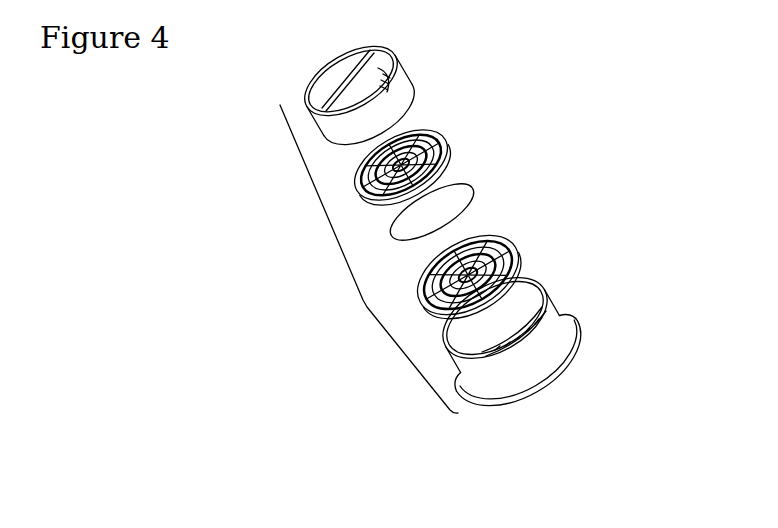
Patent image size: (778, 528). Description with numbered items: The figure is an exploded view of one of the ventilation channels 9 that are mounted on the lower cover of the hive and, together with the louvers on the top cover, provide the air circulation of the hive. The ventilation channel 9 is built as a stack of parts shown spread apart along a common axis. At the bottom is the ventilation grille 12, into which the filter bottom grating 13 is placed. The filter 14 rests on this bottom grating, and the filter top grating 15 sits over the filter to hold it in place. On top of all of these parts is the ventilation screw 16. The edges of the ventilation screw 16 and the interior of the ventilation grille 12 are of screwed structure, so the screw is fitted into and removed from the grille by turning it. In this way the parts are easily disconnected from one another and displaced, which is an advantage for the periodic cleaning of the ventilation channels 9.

The ventilation channel 9 is at (369, 259).
The ventilation grille 12 is at (552, 330).
The filter bottom grating 13 is at (517, 258).
The filter 14 is at (453, 190).
The filter top grating 15 is at (437, 138).
The ventilation screw 16 is at (395, 88).